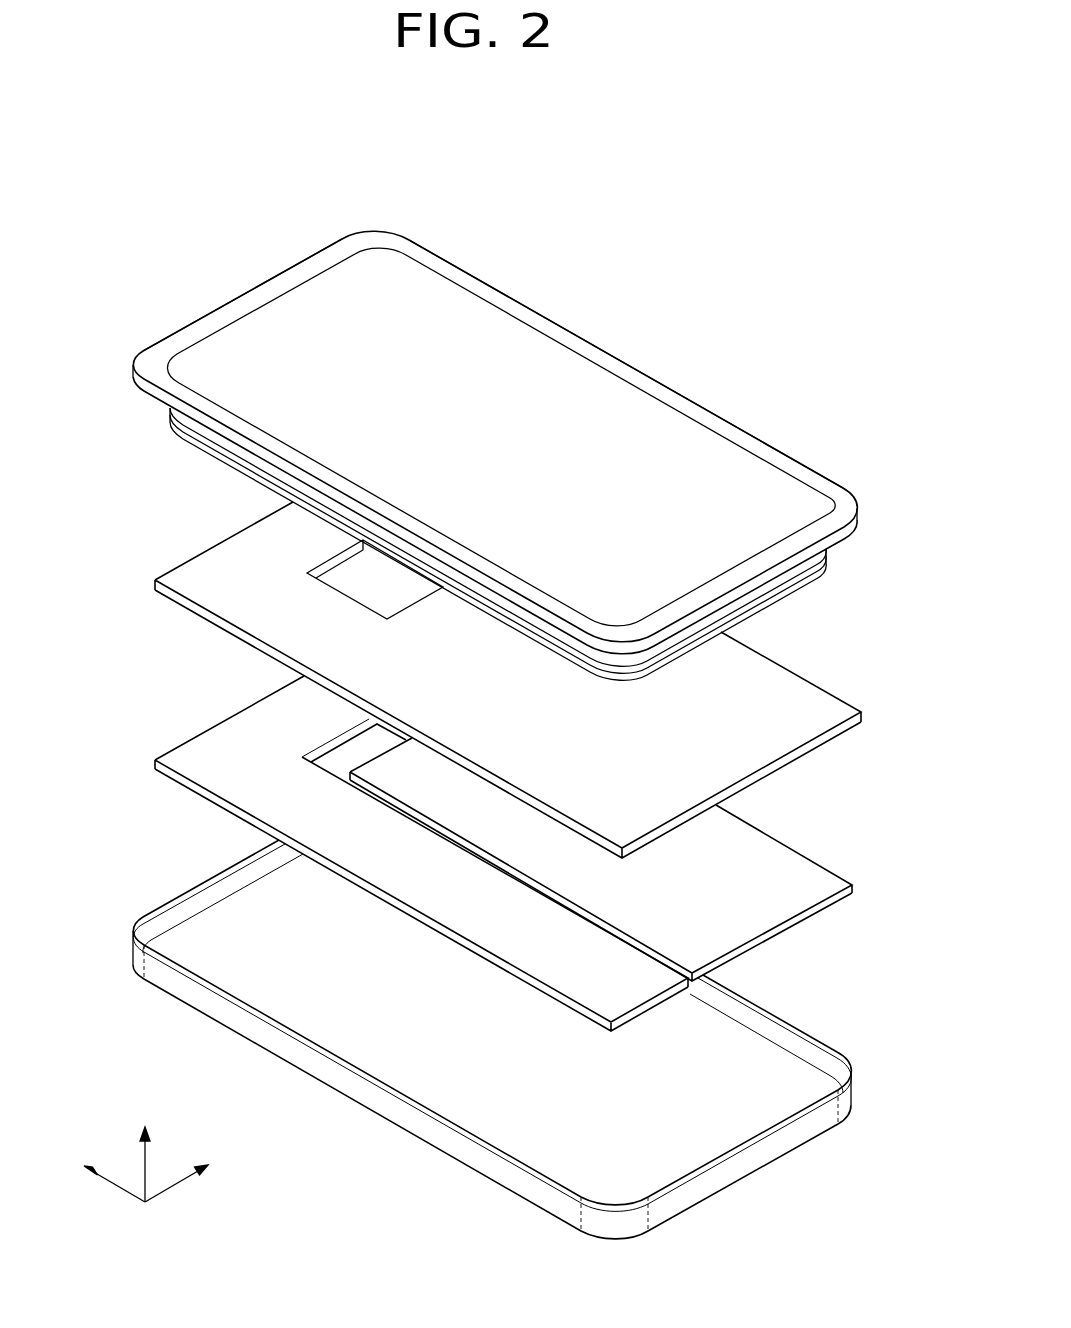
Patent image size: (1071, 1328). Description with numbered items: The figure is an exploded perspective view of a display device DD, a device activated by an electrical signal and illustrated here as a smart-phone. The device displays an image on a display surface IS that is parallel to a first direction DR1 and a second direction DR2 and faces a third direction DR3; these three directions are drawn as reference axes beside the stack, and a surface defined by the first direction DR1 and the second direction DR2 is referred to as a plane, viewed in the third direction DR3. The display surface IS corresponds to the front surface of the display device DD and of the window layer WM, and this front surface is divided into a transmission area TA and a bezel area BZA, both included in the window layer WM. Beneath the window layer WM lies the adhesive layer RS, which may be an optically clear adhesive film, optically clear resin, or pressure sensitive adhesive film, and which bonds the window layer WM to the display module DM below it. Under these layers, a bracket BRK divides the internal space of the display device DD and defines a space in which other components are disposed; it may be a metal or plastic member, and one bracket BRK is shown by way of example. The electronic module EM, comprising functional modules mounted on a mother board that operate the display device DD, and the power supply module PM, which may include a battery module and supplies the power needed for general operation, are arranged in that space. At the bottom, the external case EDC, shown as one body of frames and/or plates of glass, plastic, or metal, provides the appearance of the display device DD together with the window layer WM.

The display device DD is at (670, 272).
The display surface IS is at (275, 180).
The transmission area TA is at (332, 289).
The bezel area BZA is at (262, 290).
The window layer WM is at (146, 386).
The adhesive layer RS is at (169, 412).
The display module DM is at (169, 423).
The bracket BRK is at (154, 581).
The electronic module EM is at (154, 764).
The power supply module PM is at (852, 886).
The external case EDC is at (133, 955).
The first direction DR1 is at (193, 1166).
The second direction DR2 is at (95, 1166).
The third direction DR3 is at (146, 1148).